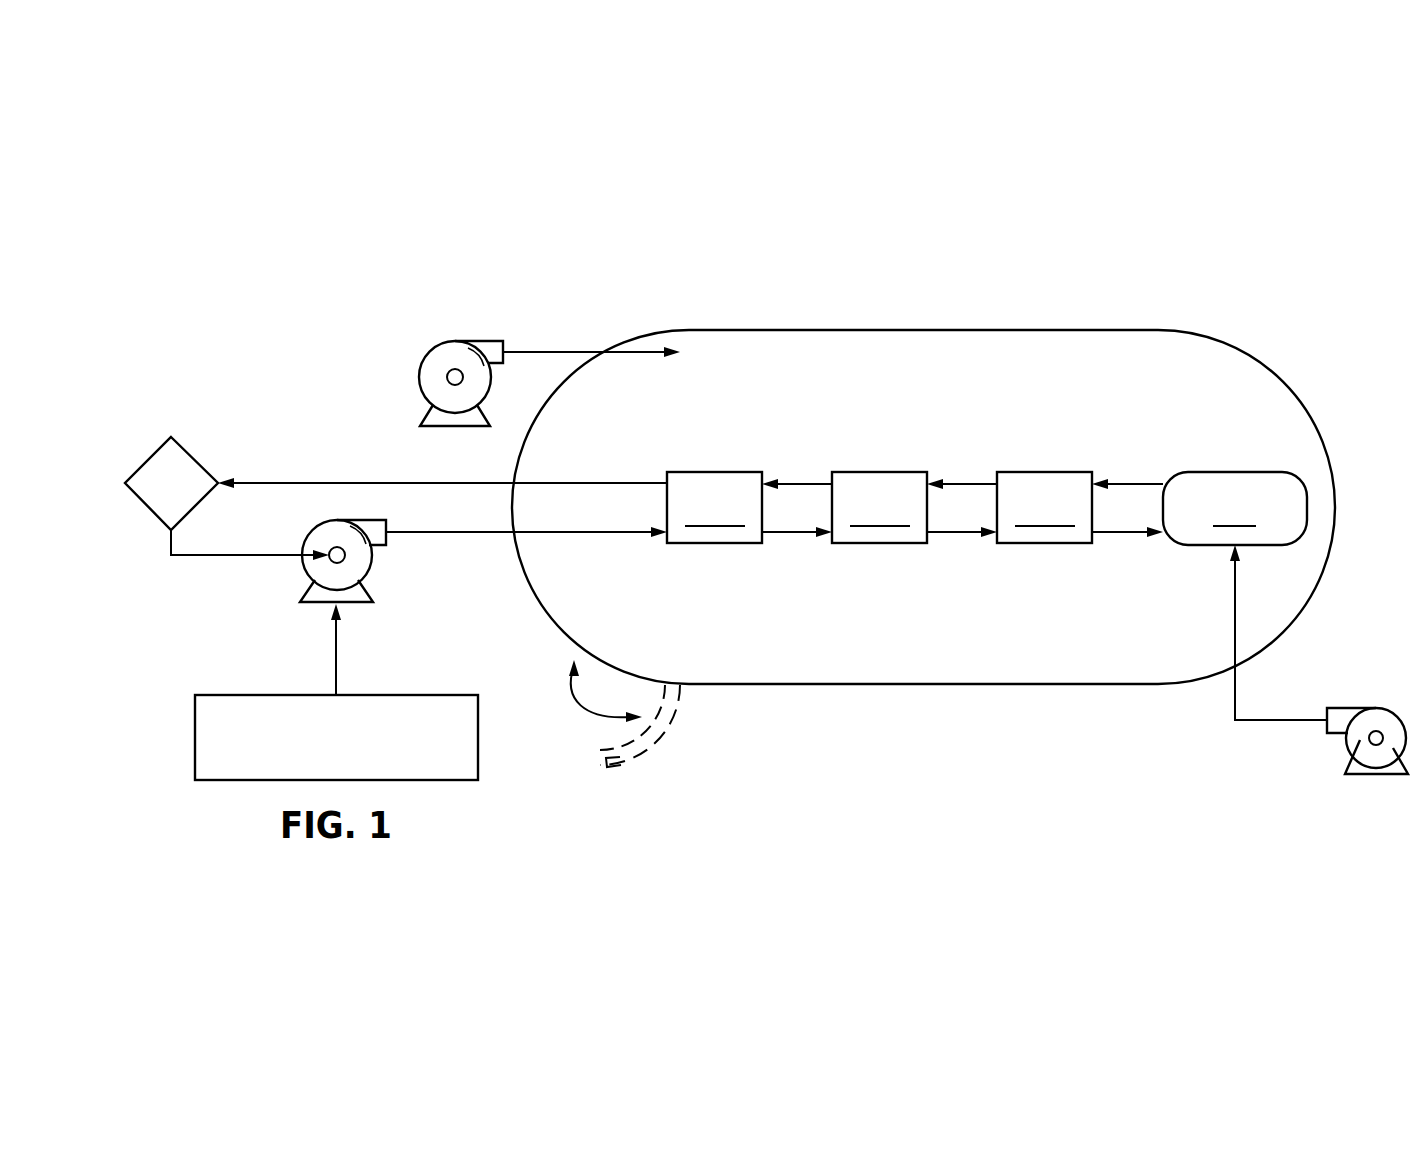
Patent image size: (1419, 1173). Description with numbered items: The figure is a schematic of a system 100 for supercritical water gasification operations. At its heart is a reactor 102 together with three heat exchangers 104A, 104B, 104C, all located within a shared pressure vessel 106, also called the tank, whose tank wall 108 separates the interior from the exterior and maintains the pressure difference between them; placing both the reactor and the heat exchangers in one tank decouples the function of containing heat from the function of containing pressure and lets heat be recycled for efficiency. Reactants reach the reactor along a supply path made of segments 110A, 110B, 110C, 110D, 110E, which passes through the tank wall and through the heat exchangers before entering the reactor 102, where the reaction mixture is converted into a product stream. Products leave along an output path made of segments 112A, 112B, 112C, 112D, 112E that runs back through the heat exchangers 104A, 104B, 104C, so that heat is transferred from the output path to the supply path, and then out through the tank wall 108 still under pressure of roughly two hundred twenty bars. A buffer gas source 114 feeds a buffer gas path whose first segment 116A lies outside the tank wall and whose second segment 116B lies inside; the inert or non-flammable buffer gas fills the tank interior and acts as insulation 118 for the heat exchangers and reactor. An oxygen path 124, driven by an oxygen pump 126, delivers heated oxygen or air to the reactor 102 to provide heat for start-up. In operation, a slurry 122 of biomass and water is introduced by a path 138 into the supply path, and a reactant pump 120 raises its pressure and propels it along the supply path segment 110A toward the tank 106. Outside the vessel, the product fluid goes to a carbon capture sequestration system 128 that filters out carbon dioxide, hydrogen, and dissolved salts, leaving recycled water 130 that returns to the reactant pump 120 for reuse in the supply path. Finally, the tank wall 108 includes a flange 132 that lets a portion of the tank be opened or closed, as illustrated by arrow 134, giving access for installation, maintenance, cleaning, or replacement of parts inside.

The system 100 is at (946, 260).
The reactor 102 is at (1235, 508).
The heat exchanger 104A is at (714, 507).
The heat exchanger 104B is at (879, 507).
The heat exchanger 104C is at (1044, 507).
The pressure vessel 106 is at (923, 474).
The tank wall 108 is at (1110, 320).
The supply path segment 110A is at (468, 537).
The supply path segment 110B is at (640, 537).
The supply path segment 110C is at (798, 537).
The supply path segment 110D is at (963, 537).
The supply path segment 110E is at (1128, 537).
The output path segment 112A is at (1128, 480).
The output path segment 112B is at (963, 480).
The output path segment 112C is at (798, 480).
The output path segment 112D is at (642, 480).
The output path segment 112E is at (385, 480).
The buffer gas source 114 is at (480, 342).
The first buffer gas path segment 116A is at (556, 352).
The second buffer gas path segment 116B is at (618, 357).
The insulation 118 is at (1108, 373).
The reactant pump 120 is at (322, 608).
The slurry 122 is at (195, 738).
The oxygen path 124 is at (1282, 723).
The oxygen pump 126 is at (1376, 776).
The carbon capture sequestration system 128 is at (210, 490).
The recycled water 130 is at (150, 508).
The flange 132 is at (640, 763).
The arrow 134 is at (580, 705).
The path 138 is at (340, 650).